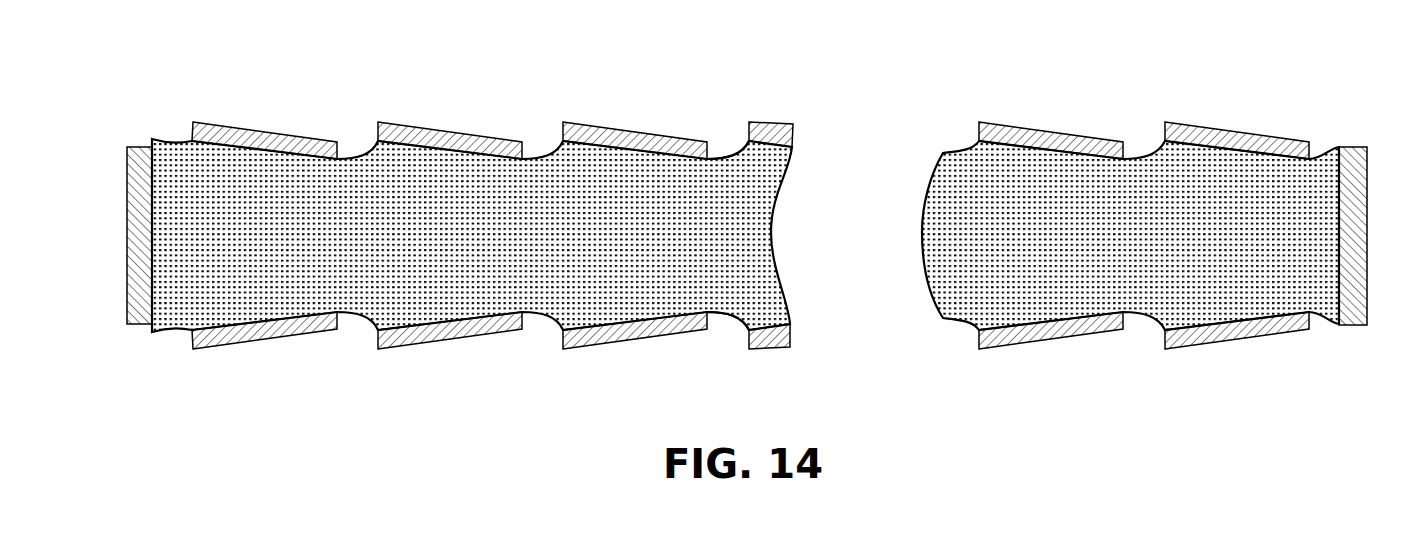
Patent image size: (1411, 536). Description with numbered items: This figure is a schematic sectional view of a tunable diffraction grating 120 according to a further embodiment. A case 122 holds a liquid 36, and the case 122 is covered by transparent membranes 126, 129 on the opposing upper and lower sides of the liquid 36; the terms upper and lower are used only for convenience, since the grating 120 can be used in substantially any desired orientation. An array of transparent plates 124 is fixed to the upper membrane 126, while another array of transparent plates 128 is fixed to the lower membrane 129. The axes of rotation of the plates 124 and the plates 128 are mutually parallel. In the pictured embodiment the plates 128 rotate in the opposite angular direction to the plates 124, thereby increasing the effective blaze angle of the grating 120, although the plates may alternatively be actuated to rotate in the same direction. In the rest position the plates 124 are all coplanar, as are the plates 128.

The tunable diffraction grating 120 is at (742, 231).
The case 122 is at (133, 267).
The transparent plates 124 is at (575, 132).
The transparent membrane 126 is at (732, 152).
The transparent plates 128 is at (575, 345).
The transparent membrane 129 is at (733, 320).
The liquid 36 is at (952, 242).